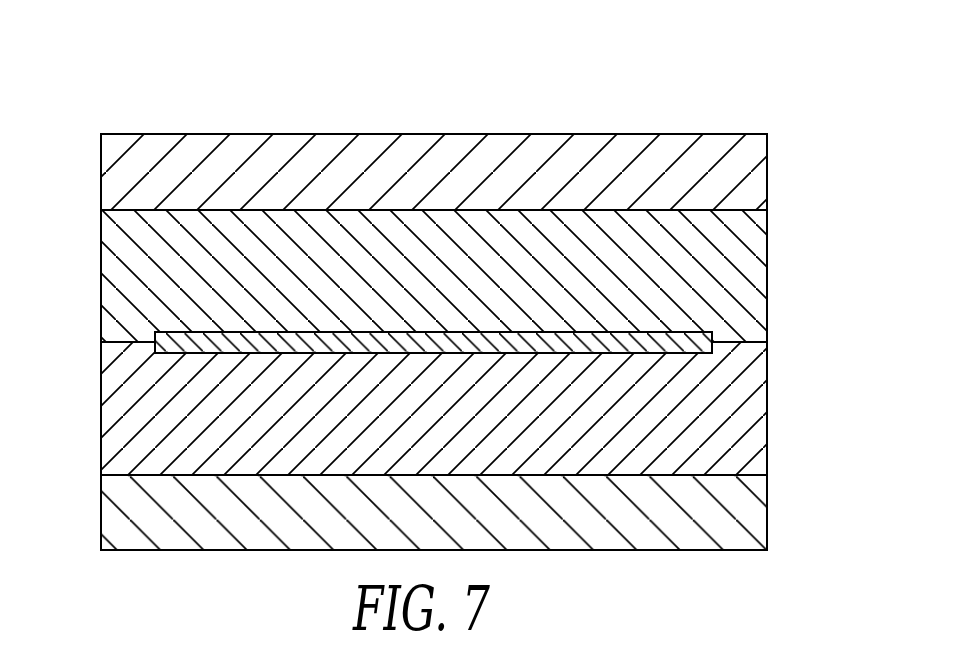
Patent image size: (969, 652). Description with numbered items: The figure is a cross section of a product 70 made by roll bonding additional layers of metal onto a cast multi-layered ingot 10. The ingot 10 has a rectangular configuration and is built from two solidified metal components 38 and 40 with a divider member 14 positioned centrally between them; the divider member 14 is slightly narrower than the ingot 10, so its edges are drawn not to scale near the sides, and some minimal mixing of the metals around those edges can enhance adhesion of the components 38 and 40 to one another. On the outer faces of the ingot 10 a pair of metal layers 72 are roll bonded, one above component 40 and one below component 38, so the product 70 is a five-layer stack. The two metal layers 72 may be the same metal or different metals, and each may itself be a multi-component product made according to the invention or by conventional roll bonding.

The product 70 is at (768, 114).
The metal layers 72 is at (768, 166).
The component 40 is at (768, 268).
The divider member 14 is at (697, 332).
The component 38 is at (768, 420).
The ingot 10 is at (70, 210).